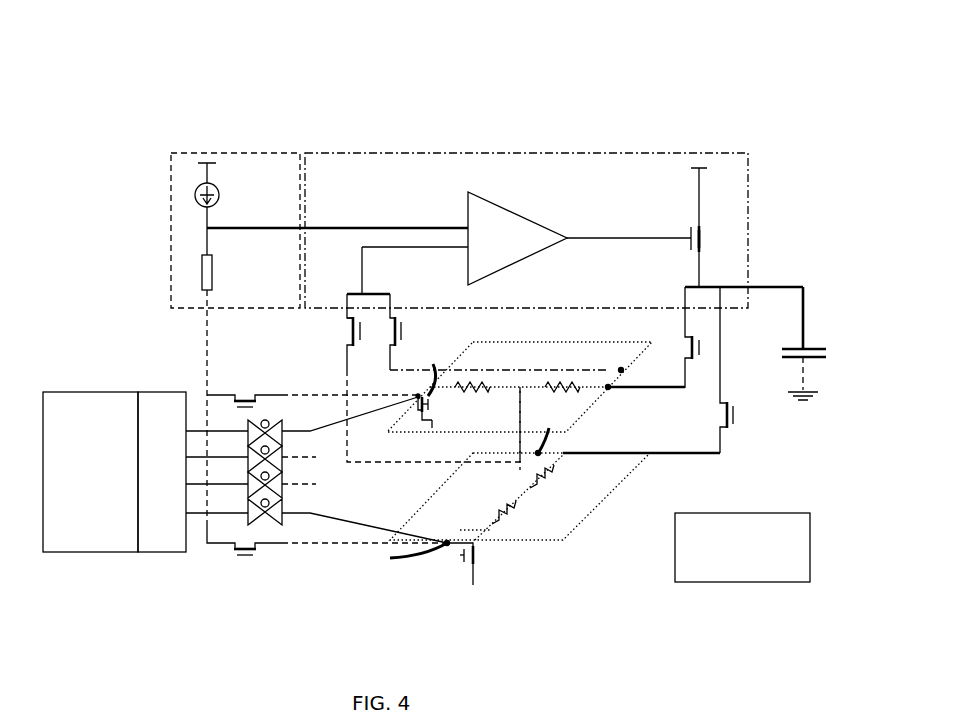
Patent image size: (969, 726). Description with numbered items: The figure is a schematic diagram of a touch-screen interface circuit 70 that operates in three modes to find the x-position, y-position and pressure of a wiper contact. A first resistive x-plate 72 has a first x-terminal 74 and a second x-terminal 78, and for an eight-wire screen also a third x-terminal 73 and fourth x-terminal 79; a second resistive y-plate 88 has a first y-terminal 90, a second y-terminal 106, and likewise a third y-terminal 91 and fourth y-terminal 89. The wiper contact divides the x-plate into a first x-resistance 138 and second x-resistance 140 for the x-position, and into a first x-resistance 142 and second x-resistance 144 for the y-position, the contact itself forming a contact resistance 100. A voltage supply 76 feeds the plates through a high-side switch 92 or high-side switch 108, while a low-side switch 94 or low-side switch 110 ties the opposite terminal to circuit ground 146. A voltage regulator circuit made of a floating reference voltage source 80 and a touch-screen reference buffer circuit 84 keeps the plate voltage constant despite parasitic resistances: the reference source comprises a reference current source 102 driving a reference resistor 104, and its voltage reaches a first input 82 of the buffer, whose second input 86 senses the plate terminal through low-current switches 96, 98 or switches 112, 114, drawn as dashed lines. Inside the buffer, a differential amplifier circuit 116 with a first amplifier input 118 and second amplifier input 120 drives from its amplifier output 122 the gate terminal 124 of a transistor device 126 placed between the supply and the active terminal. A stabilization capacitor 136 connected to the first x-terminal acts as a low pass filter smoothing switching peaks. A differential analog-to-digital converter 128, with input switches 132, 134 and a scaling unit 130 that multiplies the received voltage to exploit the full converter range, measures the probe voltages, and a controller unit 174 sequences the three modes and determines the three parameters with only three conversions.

The touch-screen interface circuit 70 is at (473, 50).
The first resistive x-plate 72 is at (627, 347).
The third x-terminal 73 is at (622, 371).
The first x-terminal 74 is at (611, 391).
The voltage supply 76 is at (706, 164).
The second x-terminal 78 is at (416, 395).
The fourth x-terminal 79 is at (422, 371).
The floating reference voltage source 80 is at (258, 162).
The first input 82 is at (306, 228).
The touch-screen reference buffer circuit 84 is at (590, 162).
The second input 86 is at (362, 292).
The second resistive y-plate 88 is at (565, 534).
The fourth y-terminal 89 is at (408, 555).
The first y-terminal 90 is at (565, 452).
The third y-terminal 91 is at (547, 432).
The high-side switch 92 is at (700, 347).
The low-side switch 94 is at (437, 408).
The switch 96 is at (403, 332).
The switch 98 is at (243, 397).
The contact resistance 100 is at (510, 455).
The reference current source 102 is at (219, 193).
The reference resistor 104 is at (208, 273).
The second y-terminal 106 is at (482, 571).
The high-side switch 108 is at (734, 416).
The low-side switch 110 is at (460, 557).
The switch 112 is at (346, 331).
The switch 114 is at (240, 557).
The differential amplifier circuit 116 is at (506, 222).
The first amplifier input 118 is at (467, 227).
The second amplifier input 120 is at (467, 250).
The amplifier output 122 is at (570, 236).
The gate terminal 124 is at (686, 240).
The transistor device 126 is at (708, 252).
The differential analog-to-digital converter 128 is at (77, 402).
The scaling unit 130 is at (147, 402).
The switch 132 is at (276, 432).
The switch 134 is at (282, 513).
The stabilization capacitor 136 is at (810, 346).
The first x-resistance 138 is at (548, 386).
The second x-resistance 140 is at (478, 386).
The first x-resistance 142 is at (546, 478).
The second x-resistance 144 is at (497, 512).
The circuit ground 146 is at (432, 424).
The controller unit 174 is at (746, 522).